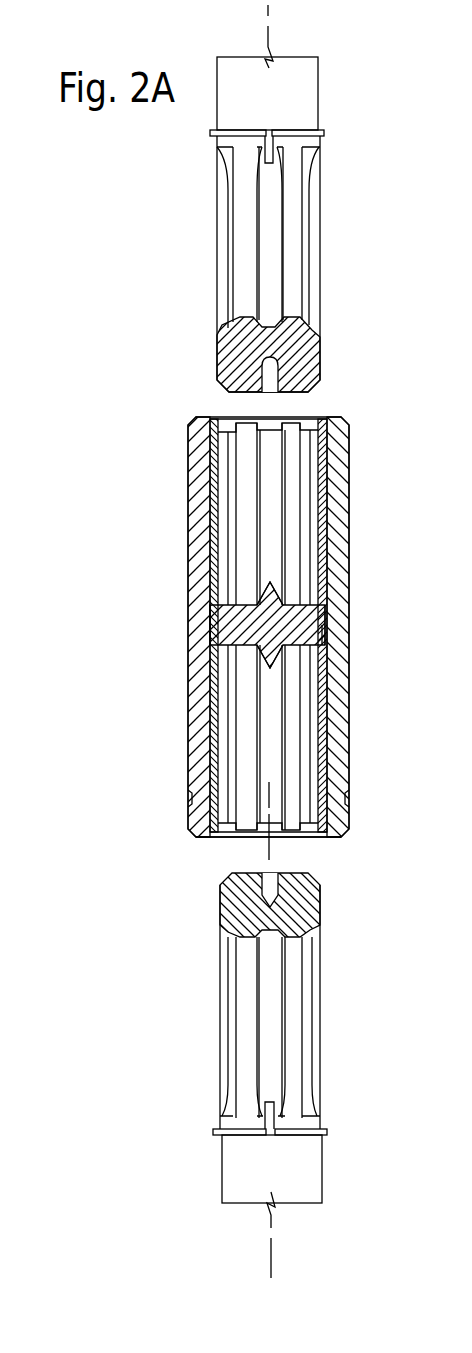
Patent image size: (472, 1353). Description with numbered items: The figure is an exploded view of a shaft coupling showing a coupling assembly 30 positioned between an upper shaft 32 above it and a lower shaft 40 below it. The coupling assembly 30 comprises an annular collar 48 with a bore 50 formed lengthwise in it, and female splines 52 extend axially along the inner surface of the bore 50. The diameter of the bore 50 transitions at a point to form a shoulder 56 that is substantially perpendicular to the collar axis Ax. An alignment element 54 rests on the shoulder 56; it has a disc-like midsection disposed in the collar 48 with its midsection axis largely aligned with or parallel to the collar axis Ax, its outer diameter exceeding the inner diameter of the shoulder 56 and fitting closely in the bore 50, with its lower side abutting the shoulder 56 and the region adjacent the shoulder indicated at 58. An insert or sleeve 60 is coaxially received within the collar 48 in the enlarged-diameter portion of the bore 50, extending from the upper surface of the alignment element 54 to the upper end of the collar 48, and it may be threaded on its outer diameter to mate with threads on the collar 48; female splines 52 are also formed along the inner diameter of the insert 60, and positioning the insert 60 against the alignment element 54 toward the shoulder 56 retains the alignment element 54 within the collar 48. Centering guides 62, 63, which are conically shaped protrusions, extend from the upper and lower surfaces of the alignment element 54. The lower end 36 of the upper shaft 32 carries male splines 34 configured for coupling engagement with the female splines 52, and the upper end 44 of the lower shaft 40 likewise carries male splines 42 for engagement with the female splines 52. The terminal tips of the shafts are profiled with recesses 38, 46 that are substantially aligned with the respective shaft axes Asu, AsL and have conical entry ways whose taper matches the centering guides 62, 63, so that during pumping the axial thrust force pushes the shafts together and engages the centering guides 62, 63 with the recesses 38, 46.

The coupling assembly 30 is at (237, 651).
The upper shaft 32 is at (288, 106).
The male splines 34 is at (314, 187).
The lower end 36 is at (243, 267).
The recess 38 is at (273, 386).
The lower shaft 40 is at (289, 1174).
The male splines 42 is at (318, 975).
The upper end 44 is at (254, 995).
The recess 46 is at (274, 886).
The annular collar 48 is at (190, 745).
The bore 50 is at (228, 848).
The female splines 52 is at (248, 788).
The alignment element 54 is at (273, 630).
The shoulder 56 is at (324, 628).
The left portion of block 58 is at (237, 628).
The insert 60 is at (213, 445).
The centering guide 62 is at (268, 597).
The centering guide 63 is at (274, 652).
The upper shaft axis Asu is at (268, 10).
The collar axis Ax is at (270, 853).
The lower shaft axis AsL is at (273, 1233).